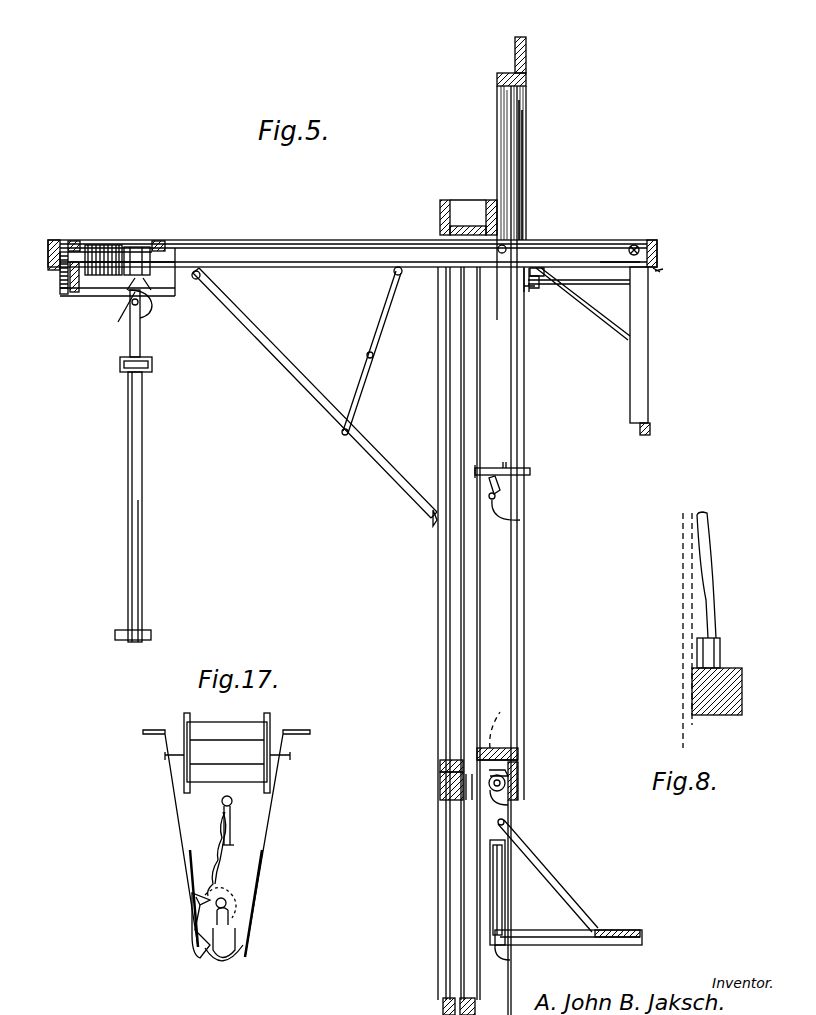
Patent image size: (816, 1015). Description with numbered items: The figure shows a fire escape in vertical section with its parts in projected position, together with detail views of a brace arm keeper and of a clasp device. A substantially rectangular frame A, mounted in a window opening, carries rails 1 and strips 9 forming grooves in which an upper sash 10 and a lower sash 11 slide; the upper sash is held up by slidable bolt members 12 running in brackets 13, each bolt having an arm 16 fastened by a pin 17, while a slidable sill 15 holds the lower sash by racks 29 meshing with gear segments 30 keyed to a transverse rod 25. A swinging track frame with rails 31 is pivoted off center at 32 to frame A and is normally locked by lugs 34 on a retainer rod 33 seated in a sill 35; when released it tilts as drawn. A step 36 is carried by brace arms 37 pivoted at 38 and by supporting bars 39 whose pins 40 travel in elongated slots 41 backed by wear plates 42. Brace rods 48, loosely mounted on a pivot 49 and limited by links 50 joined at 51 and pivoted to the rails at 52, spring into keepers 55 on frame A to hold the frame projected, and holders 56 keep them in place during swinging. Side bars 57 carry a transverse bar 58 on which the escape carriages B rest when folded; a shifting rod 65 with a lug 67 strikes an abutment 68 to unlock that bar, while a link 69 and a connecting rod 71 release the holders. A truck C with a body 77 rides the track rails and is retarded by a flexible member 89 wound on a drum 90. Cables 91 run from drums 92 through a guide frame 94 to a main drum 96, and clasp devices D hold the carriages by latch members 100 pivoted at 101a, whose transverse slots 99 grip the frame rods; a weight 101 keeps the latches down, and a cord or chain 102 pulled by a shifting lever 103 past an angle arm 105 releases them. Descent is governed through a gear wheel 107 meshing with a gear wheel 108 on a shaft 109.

In FIG. 5, the rails 1 is at (528, 78).
In FIG. 5, the strips 9 is at (470, 617).
In FIG. 5, the upper sash 10 is at (440, 767).
In FIG. 5, the lower sash 11 is at (480, 770).
In FIG. 5, the slidable bolt members 12 is at (530, 470).
In FIG. 5, the brackets 13 is at (504, 462).
In FIG. 5, the slidable sill 15 is at (520, 766).
In FIG. 5, the arm 16 is at (504, 483).
In FIG. 5, the pin 17 is at (522, 519).
In FIG. 5, the transverse rod 25 is at (510, 805).
In FIG. 5, the racks 29 is at (480, 790).
In FIG. 5, the gear segments 30 is at (506, 785).
In FIG. 5, the rails 31 is at (52, 242).
In FIG. 5, the pivot 32 is at (530, 238).
In FIG. 5, the retainer member or rod 33 is at (500, 748).
In FIG. 5, the lugs 34 is at (500, 712).
In FIG. 5, the sill 35 is at (520, 757).
In FIG. 5, the step 36 is at (640, 930).
In FIG. 5, the brace arms 37 is at (506, 890).
In FIG. 5, the pivot 38 is at (506, 820).
In FIG. 5, the supporting arms or bars 39 is at (592, 939).
In FIG. 5, the pins 40 is at (512, 960).
In FIG. 5, the elongated slots 41 is at (500, 872).
In FIG. 5, the wear plates 42 is at (512, 905).
In FIG. 5, the brace rods 48 is at (284, 375).
In FIG. 8, the brace rods 48 is at (722, 574).
In FIG. 5, the pivot 49 is at (202, 278).
In FIG. 5, the links 50 is at (388, 326).
In FIG. 5, the pivot 51 is at (366, 354).
In FIG. 5, the pivot 52 is at (393, 275).
In FIG. 5, the keepers 55 is at (432, 527).
In FIG. 8, the keepers 55 is at (722, 654).
In FIG. 5, the holders 56 is at (542, 268).
In FIG. 5, the side bars 57 is at (649, 362).
In FIG. 5, the transverse bar 58 is at (651, 430).
In FIG. 5, the shifting member or rod 65 is at (608, 284).
In FIG. 5, the angle arm or lug 67 is at (528, 290).
In FIG. 5, the abutment 68 is at (536, 290).
In FIG. 5, the link 69 is at (657, 272).
In FIG. 5, the connecting arm or rod 71 is at (598, 260).
In FIG. 5, the body 77 is at (74, 240).
In FIG. 5, the flexible member 89 is at (395, 240).
In FIG. 5, the roller or drum 90 is at (661, 254).
In FIG. 5, the cables or ropes 91 is at (98, 246).
In FIG. 17, the drums 92 is at (232, 732).
In FIG. 5, the guide frame 94 is at (124, 360).
In FIG. 5, the main drum 96 is at (137, 246).
In FIG. 17, the transverse slots 99 is at (234, 920).
In FIG. 5, the latch members 100 is at (150, 305).
In FIG. 17, the latch members 100 is at (220, 958).
In FIG. 17, the weight 101 is at (198, 924).
In FIG. 17, the pivot 101a is at (232, 900).
In FIG. 17, the cord or chain 102 is at (210, 848).
In FIG. 17, the shifting lever or member 103 is at (222, 804).
In FIG. 17, the angle arm 105 is at (236, 842).
In FIG. 5, the gear wheel 107 is at (68, 282).
In FIG. 5, the gear wheel 108 is at (74, 294).
In FIG. 5, the shaft 109 is at (95, 294).
In FIG. 8, the frame A is at (744, 682).
In FIG. 5, the escape carriages B is at (128, 497).
In FIG. 5, the slidable carriage or truck C is at (158, 240).
In FIG. 5, the clasp devices D is at (135, 302).
In FIG. 17, the clasp devices D is at (258, 816).